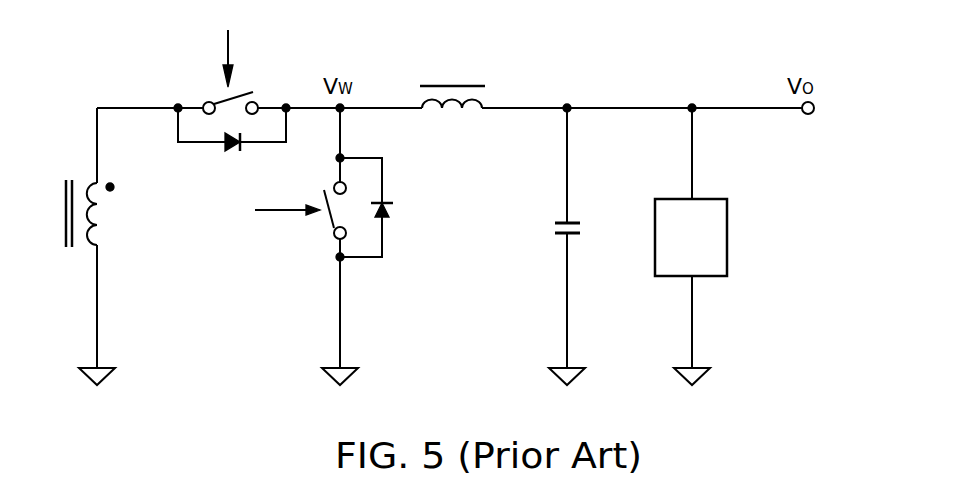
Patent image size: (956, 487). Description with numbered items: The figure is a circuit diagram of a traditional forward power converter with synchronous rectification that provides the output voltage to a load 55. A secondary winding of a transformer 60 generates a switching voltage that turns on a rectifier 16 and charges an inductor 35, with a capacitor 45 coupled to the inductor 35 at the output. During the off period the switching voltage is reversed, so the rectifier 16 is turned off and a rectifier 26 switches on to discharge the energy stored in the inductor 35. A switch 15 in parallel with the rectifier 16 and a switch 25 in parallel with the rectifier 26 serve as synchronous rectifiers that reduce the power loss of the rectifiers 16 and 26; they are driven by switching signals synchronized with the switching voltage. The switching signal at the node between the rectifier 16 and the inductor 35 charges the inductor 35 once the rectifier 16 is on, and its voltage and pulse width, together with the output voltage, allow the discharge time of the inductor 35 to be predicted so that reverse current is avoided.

The switch 15 is at (205, 104).
The rectifier 16 is at (225, 150).
The switch 25 is at (320, 232).
The rectifier 26 is at (392, 211).
The inductor 35 is at (480, 95).
The capacitor 45 is at (578, 237).
The load 55 is at (727, 238).
The transformer 60 is at (97, 231).